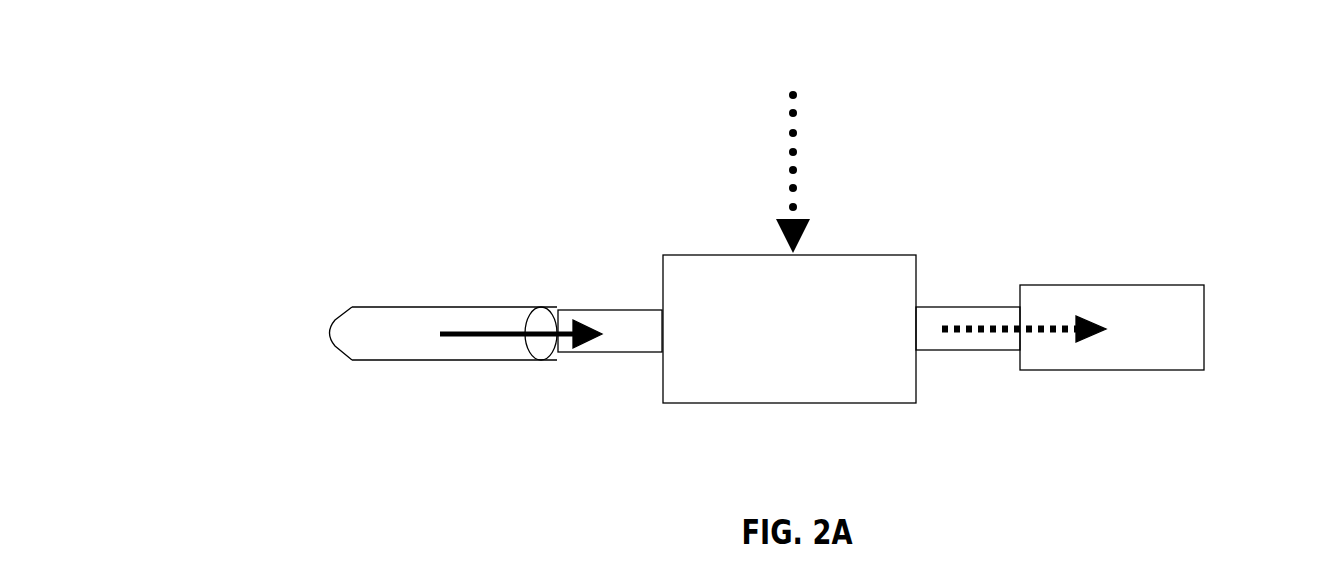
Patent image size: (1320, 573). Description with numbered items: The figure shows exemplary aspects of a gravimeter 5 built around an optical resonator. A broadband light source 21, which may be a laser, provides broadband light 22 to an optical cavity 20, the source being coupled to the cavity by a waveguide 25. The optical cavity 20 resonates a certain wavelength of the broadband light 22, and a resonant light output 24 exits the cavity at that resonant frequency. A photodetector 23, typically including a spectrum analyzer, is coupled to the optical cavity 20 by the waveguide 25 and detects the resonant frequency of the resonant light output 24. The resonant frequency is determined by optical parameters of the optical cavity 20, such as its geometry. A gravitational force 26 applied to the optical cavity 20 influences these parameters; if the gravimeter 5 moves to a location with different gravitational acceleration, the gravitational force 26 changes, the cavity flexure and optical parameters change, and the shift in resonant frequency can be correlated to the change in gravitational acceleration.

The gravimeter 5 is at (983, 453).
The optical cavity 20 is at (888, 253).
The broadband light source 21 is at (350, 309).
The broadband light 22 is at (502, 338).
The photodetector 23 is at (1205, 313).
The resonant light output 24 is at (1053, 324).
The waveguide 25 is at (620, 353).
The gravitational force 26 is at (792, 152).